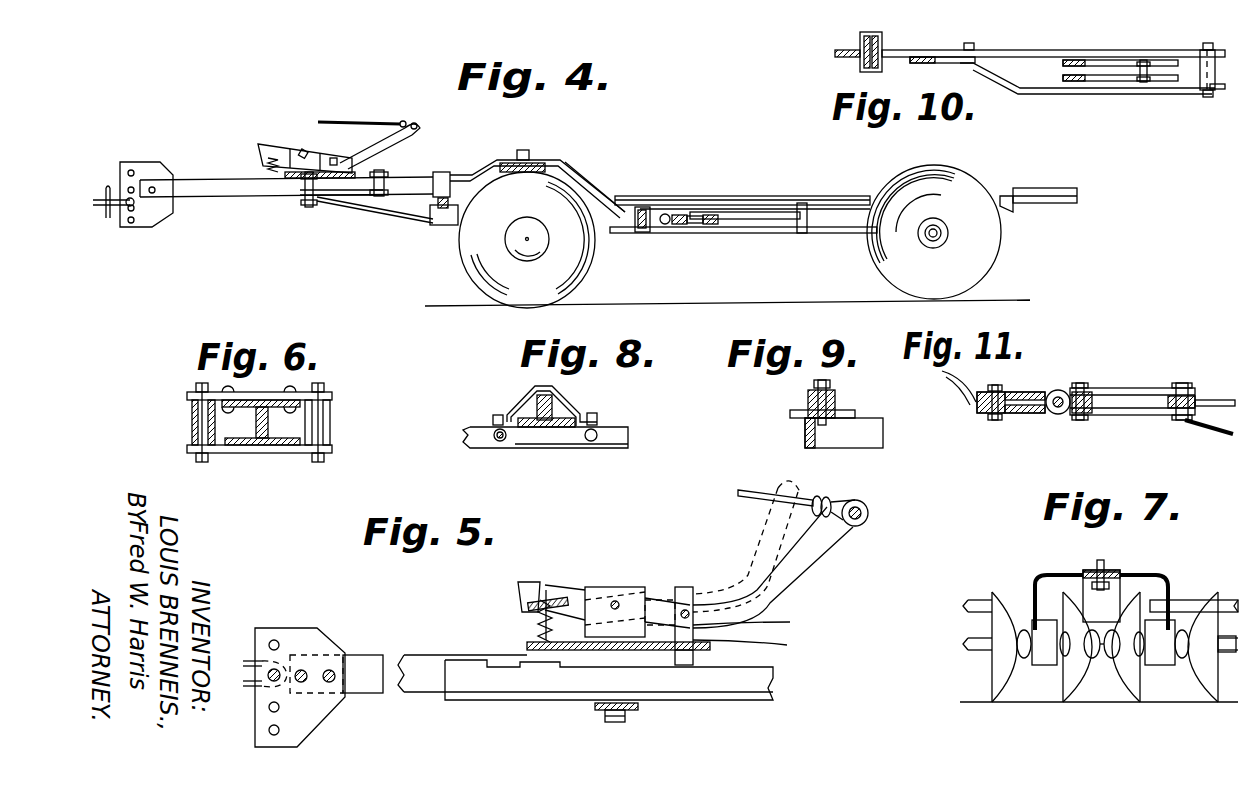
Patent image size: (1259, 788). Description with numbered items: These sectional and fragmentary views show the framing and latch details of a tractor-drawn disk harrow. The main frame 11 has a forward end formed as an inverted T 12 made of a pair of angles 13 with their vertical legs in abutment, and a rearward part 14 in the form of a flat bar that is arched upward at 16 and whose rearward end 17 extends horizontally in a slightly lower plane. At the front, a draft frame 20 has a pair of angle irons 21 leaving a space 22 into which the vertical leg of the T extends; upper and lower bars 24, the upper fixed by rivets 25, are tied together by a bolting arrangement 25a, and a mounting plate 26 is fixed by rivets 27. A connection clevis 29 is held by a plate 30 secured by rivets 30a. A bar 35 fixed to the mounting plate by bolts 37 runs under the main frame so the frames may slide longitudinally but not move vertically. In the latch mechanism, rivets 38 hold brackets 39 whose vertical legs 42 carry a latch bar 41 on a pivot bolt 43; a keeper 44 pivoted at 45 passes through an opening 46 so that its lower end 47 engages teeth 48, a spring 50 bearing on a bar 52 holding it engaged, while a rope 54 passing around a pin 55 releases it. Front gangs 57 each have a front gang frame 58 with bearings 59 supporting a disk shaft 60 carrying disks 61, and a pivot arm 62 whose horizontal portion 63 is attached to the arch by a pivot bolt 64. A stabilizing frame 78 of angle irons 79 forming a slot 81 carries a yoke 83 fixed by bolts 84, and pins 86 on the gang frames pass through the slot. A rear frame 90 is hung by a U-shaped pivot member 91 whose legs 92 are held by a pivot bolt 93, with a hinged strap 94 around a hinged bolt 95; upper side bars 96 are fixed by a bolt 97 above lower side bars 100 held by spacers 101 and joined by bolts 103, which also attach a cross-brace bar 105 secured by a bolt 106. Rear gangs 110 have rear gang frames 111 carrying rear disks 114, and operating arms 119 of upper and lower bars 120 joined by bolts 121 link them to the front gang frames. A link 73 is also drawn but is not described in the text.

In FIG. 4, the main frame 11 is at (410, 180).
In FIG. 11, the main frame 11 is at (938, 390).
In FIG. 4, the inverted T forward end 12 is at (462, 172).
In FIG. 6, the inverted T forward end 12 is at (265, 445).
In FIG. 8, the inverted T forward end 12 is at (550, 398).
In FIG. 5, the inverted T forward end 12 is at (755, 690).
In FIG. 6, the angles 13 is at (262, 440).
In FIG. 4, the rearward part 14 is at (578, 176).
In FIG. 4, the arched portion 16 is at (540, 160).
In FIG. 7, the arched portion 16 is at (1090, 568).
In FIG. 4, the rearward end 17 is at (618, 200).
In FIG. 11, the rearward end 17 is at (962, 400).
In FIG. 4, the draft frame 20 is at (210, 182).
In FIG. 6, the draft frame 20 is at (190, 417).
In FIG. 5, the draft frame 20 is at (412, 655).
In FIG. 6, the angle irons 21 is at (270, 428).
In FIG. 6, the space 22 is at (240, 445).
In FIG. 6, the bars 24 is at (325, 395).
In FIG. 6, the rivets 25 is at (295, 390).
In FIG. 6, the bolting arrangement 25a is at (195, 440).
In FIG. 5, the mounting plate 26 is at (525, 655).
In FIG. 4, the rivets 27 is at (320, 175).
In FIG. 5, the rivets 27 is at (527, 647).
In FIG. 4, the connection clevis 29 is at (107, 218).
In FIG. 5, the connection clevis 29 is at (250, 688).
In FIG. 4, the plate 30 is at (163, 167).
In FIG. 5, the plate 30 is at (310, 722).
In FIG. 4, the rivets 30a is at (153, 196).
In FIG. 5, the rivets 30a is at (329, 683).
In FIG. 5, the bar 35 is at (600, 712).
In FIG. 4, the bolts 37 is at (305, 205).
In FIG. 5, the bolts 37 is at (620, 722).
In FIG. 5, the rivets 38 is at (650, 598).
In FIG. 5, the brackets 39 is at (630, 585).
In FIG. 4, the latch bar 41 is at (410, 142).
In FIG. 5, the latch bar 41 is at (815, 560).
In FIG. 4, the vertical legs 42 is at (296, 146).
In FIG. 5, the vertical legs 42 is at (630, 588).
In FIG. 5, the pivot bolt 43 is at (615, 600).
In FIG. 4, the keeper 44 is at (352, 165).
In FIG. 5, the keeper 44 is at (786, 628).
In FIG. 5, the pivot 45 is at (688, 610).
In FIG. 5, the opening 46 is at (786, 645).
In FIG. 5, the lower end 47 is at (683, 667).
In FIG. 5, the teeth 48 is at (560, 670).
In FIG. 4, the spring 50 is at (268, 166).
In FIG. 5, the spring 50 is at (538, 625).
In FIG. 5, the bar 52 is at (535, 583).
In FIG. 4, the rope 54 is at (345, 120).
In FIG. 5, the rope 54 is at (740, 490).
In FIG. 5, the pin 55 is at (868, 506).
In FIG. 9, the front gangs 57 is at (833, 450).
In FIG. 7, the front gangs 57 is at (1110, 678).
In FIG. 9, the front gang frame 58 is at (870, 450).
In FIG. 7, the front gang frame 58 is at (1188, 600).
In FIG. 7, the bearings 59 is at (1155, 660).
In FIG. 7, the disk shaft 60 is at (1230, 650).
In FIG. 4, the disks 61 is at (570, 272).
In FIG. 7, the disks 61 is at (1205, 680).
In FIG. 7, the pivot arm 62 is at (1033, 580).
In FIG. 7, the horizontal portion 63 is at (1047, 572).
In FIG. 7, the pivot bolt 64 is at (1118, 570).
In FIG. 4, the link 73 is at (360, 208).
In FIG. 4, the stabilizing frame 78 is at (433, 218).
In FIG. 8, the stabilizing frame 78 is at (615, 437).
In FIG. 9, the stabilizing frame 78 is at (845, 412).
In FIG. 8, the angle irons 79 is at (560, 410).
In FIG. 9, the angle irons 79 is at (790, 414).
In FIG. 9, the slot 81 is at (808, 395).
In FIG. 8, the yoke 83 is at (520, 396).
In FIG. 8, the bolts 84 is at (495, 428).
In FIG. 9, the pins 86 is at (830, 390).
In FIG. 10, the rear frame 90 is at (1020, 92).
In FIG. 11, the rear frame 90 is at (1208, 432).
In FIG. 11, the pivot member 91 is at (1015, 392).
In FIG. 11, the legs 92 is at (982, 415).
In FIG. 11, the pivot bolt 93 is at (1000, 385).
In FIG. 11, the hinged strap 94 is at (1080, 383).
In FIG. 4, the hinged bolt 95 is at (664, 226).
In FIG. 11, the hinged bolt 95 is at (1052, 414).
In FIG. 4, the upper side bars 96 is at (680, 214).
In FIG. 10, the upper side bars 96 is at (935, 50).
In FIG. 11, the upper side bars 96 is at (1095, 415).
In FIG. 10, the bolt 97 is at (878, 44).
In FIG. 11, the bolt 97 is at (1085, 388).
In FIG. 4, the lower side bars 100 is at (822, 233).
In FIG. 10, the lower side bars 100 is at (1162, 90).
In FIG. 4, the spacers 101 is at (800, 230).
In FIG. 10, the spacers 101 is at (1200, 92).
In FIG. 10, the bolts 103 is at (980, 43).
In FIG. 4, the cross-brace bar 105 is at (722, 212).
In FIG. 10, the cross-brace bar 105 is at (940, 62).
In FIG. 11, the cross-brace bar 105 is at (1195, 400).
In FIG. 11, the bolt 106 is at (1185, 383).
In FIG. 4, the rear gangs 110 is at (1006, 225).
In FIG. 4, the rear gang frame 111 is at (1012, 192).
In FIG. 4, the rear disks 114 is at (990, 256).
In FIG. 4, the operating arms 119 is at (765, 208).
In FIG. 10, the operating arms 119 is at (1095, 70).
In FIG. 10, the upper and lower bars 120 is at (1120, 60).
In FIG. 10, the bolts 121 is at (1150, 68).